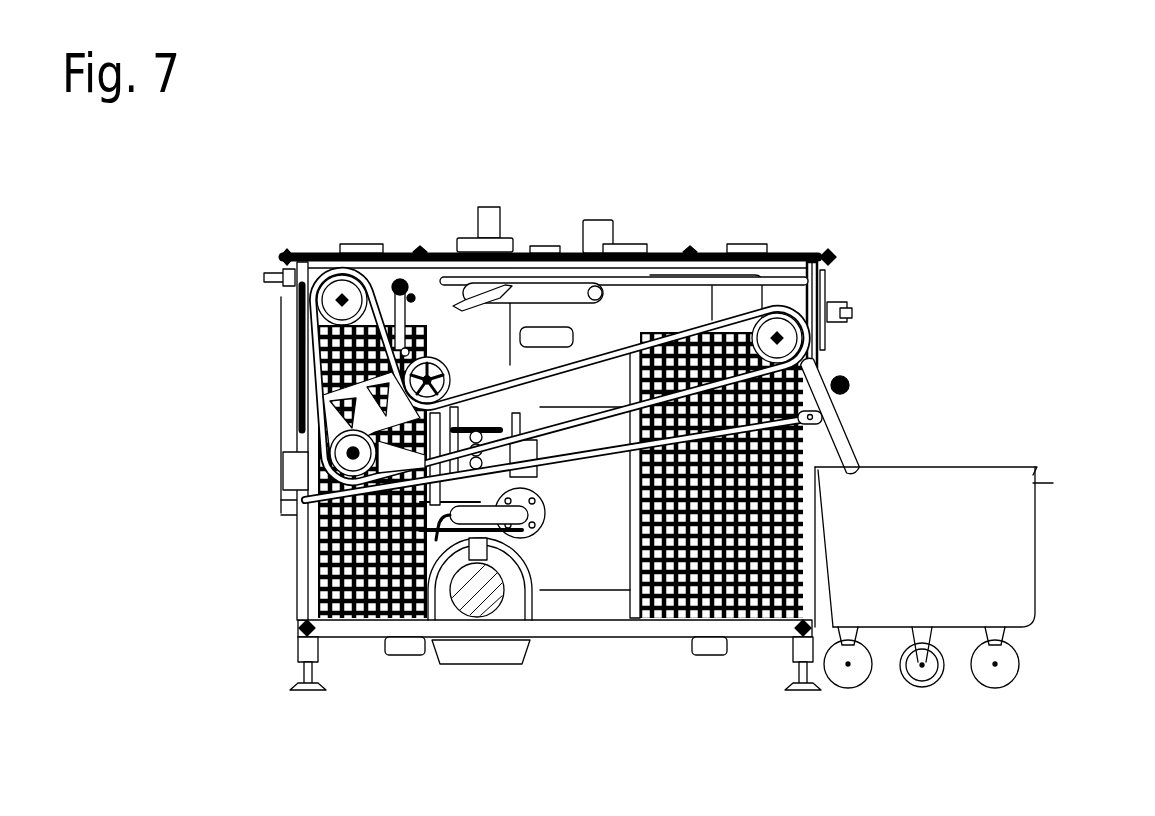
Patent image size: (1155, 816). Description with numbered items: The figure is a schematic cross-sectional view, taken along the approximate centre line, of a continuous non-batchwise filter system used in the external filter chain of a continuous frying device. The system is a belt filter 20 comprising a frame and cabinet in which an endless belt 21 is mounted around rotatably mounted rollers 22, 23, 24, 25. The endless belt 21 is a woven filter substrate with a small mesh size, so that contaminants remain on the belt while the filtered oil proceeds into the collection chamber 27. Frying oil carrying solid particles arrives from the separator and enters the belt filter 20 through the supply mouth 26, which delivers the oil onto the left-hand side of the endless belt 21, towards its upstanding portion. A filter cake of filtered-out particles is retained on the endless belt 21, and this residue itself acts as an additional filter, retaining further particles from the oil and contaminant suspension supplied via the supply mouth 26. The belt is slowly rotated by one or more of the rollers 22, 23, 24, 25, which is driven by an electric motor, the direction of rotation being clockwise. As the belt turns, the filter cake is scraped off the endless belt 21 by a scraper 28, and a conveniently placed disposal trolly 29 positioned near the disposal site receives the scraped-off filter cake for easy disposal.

The belt filter 20 is at (256, 253).
The endless belt 21 is at (687, 330).
The roller 22 is at (334, 290).
The roller 23 is at (826, 350).
The roller 24 is at (330, 440).
The roller 25 is at (320, 362).
The supply mouth 26 is at (448, 306).
The collection chamber 27 is at (648, 362).
The scraper 28 is at (828, 362).
The disposal trolly 29 is at (997, 565).